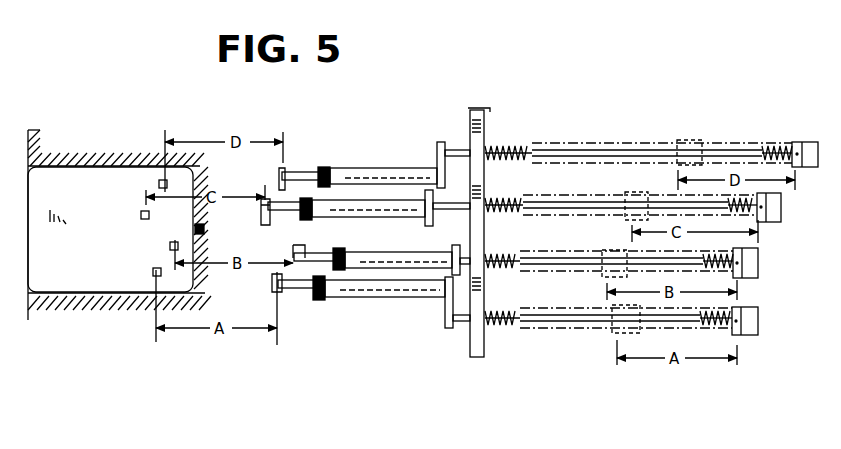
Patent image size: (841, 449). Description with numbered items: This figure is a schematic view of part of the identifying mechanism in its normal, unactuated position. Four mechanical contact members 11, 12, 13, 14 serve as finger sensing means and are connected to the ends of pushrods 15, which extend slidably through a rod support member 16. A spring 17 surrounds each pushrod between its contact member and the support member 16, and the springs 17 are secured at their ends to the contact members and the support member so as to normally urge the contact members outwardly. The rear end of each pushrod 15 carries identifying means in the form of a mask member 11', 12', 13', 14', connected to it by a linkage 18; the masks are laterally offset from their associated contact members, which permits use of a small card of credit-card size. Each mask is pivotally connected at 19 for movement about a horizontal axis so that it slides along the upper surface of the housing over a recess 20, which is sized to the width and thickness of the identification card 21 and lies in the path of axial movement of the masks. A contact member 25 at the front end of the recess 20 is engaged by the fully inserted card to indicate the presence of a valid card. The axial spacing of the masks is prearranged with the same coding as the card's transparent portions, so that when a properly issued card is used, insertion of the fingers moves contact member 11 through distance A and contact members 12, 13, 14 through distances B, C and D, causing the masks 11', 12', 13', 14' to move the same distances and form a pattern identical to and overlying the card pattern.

The contact member 11 is at (766, 321).
The contact member 12 is at (767, 263).
The contact member 13 is at (789, 209).
The contact member 14 is at (800, 134).
The mask member 11' is at (276, 287).
The mask member 12' is at (319, 241).
The mask member 13' is at (267, 212).
The mask member 14' is at (282, 176).
The pushrod 15 is at (600, 150).
The rod support member 16 is at (470, 122).
The spring 17 is at (514, 147).
The linkage 18 is at (368, 210).
The pivotal connection 19 is at (306, 200).
The recess 20 is at (90, 168).
The identification card 21 is at (74, 257).
The contact member 25 is at (206, 230).